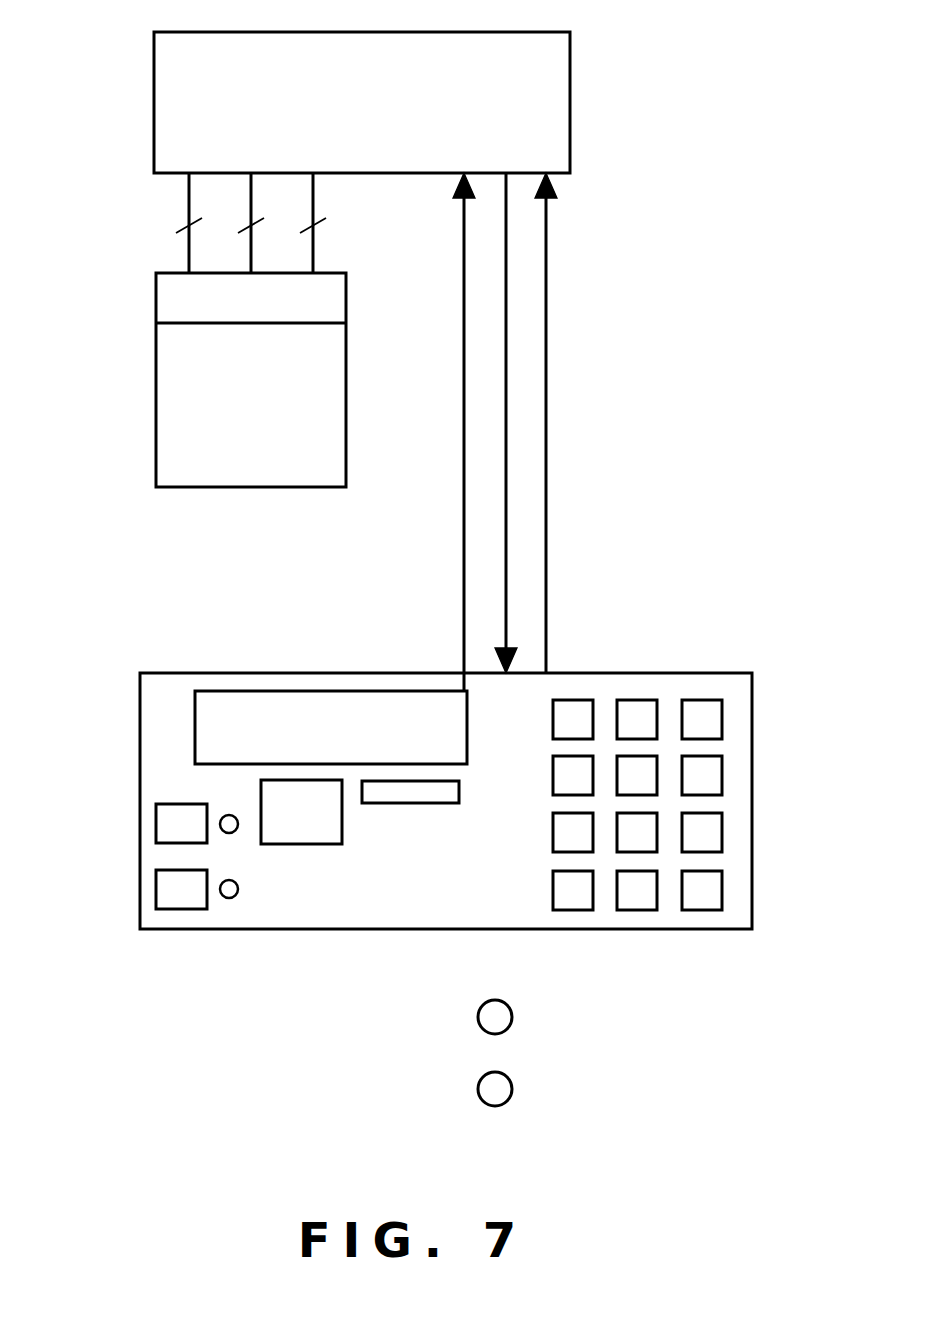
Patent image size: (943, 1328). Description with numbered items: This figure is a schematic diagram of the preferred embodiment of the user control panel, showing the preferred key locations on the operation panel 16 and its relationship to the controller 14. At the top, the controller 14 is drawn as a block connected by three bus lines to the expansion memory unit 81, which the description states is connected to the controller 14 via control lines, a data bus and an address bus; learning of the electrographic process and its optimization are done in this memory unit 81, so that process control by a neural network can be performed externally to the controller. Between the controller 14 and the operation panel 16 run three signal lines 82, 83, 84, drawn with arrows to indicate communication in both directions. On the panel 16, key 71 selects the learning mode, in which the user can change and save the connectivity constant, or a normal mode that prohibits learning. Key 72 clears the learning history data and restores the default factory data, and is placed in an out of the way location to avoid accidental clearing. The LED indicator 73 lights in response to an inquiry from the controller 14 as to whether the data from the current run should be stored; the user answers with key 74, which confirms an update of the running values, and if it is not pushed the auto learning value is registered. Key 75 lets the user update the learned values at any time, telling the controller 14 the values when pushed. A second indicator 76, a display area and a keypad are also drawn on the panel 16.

The controller 14 is at (570, 75).
The operation panel 16 is at (341, 922).
The key 71 is at (512, 1010).
The key 72 is at (512, 1083).
The LED indicator 73 is at (232, 897).
The key 74 is at (163, 823).
The key 75 is at (163, 891).
The indicator lamp 76 is at (222, 818).
The expansion memory unit 81 is at (331, 478).
The signal line 82 is at (546, 303).
The signal line 83 is at (506, 376).
The signal line 84 is at (464, 366).